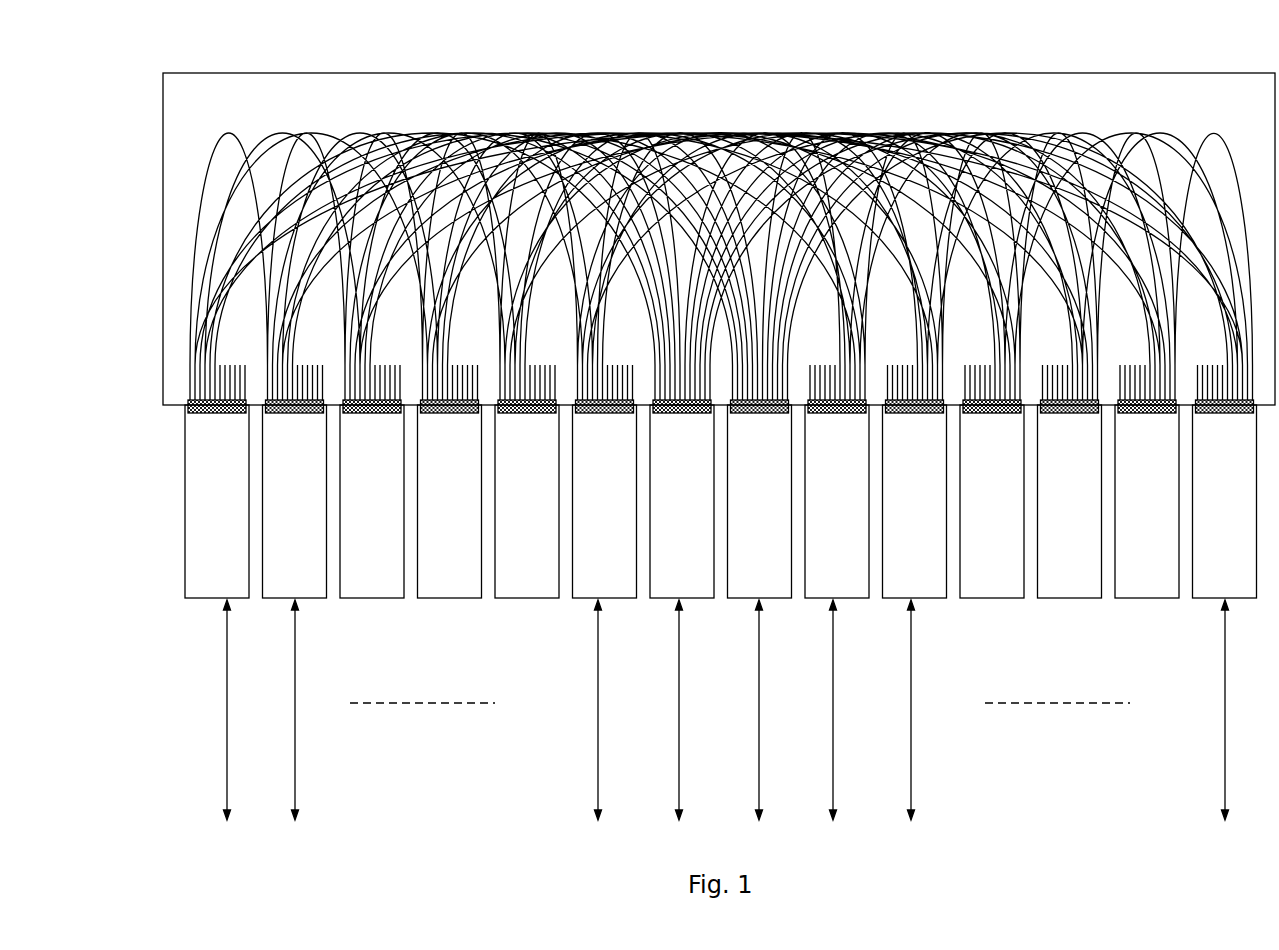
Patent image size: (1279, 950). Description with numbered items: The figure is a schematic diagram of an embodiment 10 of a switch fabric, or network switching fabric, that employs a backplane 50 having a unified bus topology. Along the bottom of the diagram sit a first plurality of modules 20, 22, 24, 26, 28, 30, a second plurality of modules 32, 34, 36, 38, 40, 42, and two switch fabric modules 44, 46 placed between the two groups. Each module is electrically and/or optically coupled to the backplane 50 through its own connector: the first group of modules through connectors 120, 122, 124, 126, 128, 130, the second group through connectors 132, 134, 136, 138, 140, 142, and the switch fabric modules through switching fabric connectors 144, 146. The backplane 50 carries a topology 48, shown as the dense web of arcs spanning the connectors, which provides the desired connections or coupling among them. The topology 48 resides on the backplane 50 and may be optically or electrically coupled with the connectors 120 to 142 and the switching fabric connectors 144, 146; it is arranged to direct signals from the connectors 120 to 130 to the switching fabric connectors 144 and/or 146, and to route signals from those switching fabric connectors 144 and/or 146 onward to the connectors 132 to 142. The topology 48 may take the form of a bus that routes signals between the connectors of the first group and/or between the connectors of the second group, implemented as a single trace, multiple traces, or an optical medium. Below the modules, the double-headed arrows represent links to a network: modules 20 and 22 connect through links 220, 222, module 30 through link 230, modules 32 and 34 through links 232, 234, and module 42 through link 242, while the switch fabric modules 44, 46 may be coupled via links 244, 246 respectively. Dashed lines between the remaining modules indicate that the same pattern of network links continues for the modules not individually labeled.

The embodiment of a switch fabric 10 is at (397, 762).
The backplane 50 is at (414, 73).
The topology 48 is at (812, 120).
The module 20 is at (214, 600).
The module 22 is at (279, 600).
The module 24 is at (376, 600).
The module 26 is at (454, 600).
The module 28 is at (536, 600).
The module 30 is at (582, 600).
The module 32 is at (813, 600).
The module 34 is at (889, 600).
The module 36 is at (998, 600).
The module 38 is at (1071, 600).
The module 40 is at (1143, 600).
The module 42 is at (1205, 600).
The switch fabric module 44 is at (671, 600).
The switch fabric module 46 is at (748, 600).
The connector 120 is at (220, 417).
The connector 122 is at (301, 417).
The connector 124 is at (378, 417).
The connector 126 is at (460, 417).
The connector 128 is at (534, 417).
The connector 130 is at (611, 417).
The connector 132 is at (842, 417).
The connector 134 is at (919, 417).
The connector 136 is at (997, 417).
The connector 138 is at (1074, 417).
The connector 140 is at (1152, 417).
The connector 142 is at (1229, 417).
The switching fabric connector 144 is at (680, 417).
The switching fabric connector 146 is at (761, 417).
The link 220 is at (227, 688).
The link 222 is at (295, 688).
The link 230 is at (598, 688).
The link 232 is at (833, 688).
The link 234 is at (911, 688).
The link 242 is at (1225, 688).
The link 244 is at (679, 688).
The link 246 is at (759, 688).